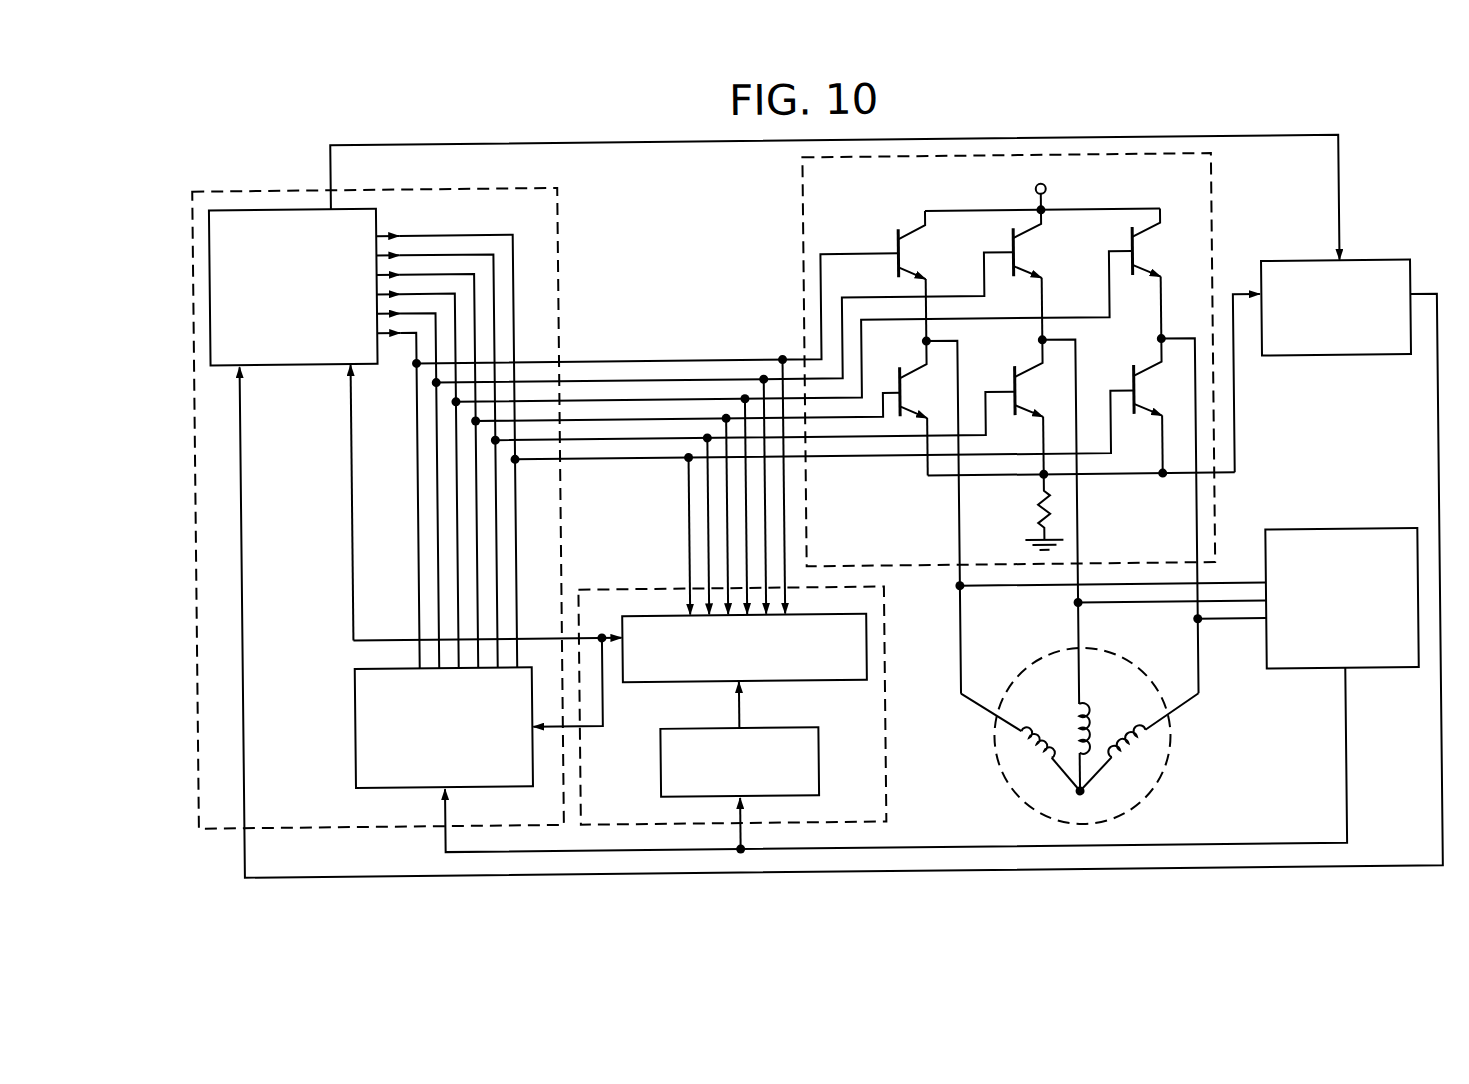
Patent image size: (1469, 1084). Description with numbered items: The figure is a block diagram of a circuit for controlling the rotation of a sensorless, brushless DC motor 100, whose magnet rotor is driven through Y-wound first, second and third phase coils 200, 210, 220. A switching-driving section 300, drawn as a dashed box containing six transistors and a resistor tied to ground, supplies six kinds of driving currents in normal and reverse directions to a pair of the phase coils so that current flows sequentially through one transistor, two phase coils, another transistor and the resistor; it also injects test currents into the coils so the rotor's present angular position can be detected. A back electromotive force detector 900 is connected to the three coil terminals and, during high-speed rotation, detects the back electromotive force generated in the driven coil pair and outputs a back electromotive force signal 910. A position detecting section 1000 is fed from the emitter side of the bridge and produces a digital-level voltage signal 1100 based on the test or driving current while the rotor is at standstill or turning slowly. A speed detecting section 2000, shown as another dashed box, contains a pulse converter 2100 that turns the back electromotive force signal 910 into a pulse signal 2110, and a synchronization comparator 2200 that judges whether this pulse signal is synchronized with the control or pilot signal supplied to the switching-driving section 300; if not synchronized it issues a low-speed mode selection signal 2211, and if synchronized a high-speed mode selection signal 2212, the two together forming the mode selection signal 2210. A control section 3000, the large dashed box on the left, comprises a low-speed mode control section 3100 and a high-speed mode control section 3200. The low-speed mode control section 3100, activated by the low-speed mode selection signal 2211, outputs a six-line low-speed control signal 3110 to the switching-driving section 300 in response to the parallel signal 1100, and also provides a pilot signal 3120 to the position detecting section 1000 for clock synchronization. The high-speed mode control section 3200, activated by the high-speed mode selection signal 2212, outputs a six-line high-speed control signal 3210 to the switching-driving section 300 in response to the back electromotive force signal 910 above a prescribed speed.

The motor 100 is at (1086, 733).
The first phase coil 200 is at (1015, 753).
The second phase coil 210 is at (1087, 730).
The third phase coil 220 is at (1138, 756).
The switching-driving section 300 is at (803, 272).
The back electromotive force detector 900 is at (1336, 533).
The back electromotive force signal 910 is at (1353, 717).
The position detecting section 1000 is at (1375, 265).
The voltage signal 1100 is at (1423, 400).
The speed detecting section 2000 is at (655, 587).
The pulse converter 2100 is at (814, 756).
The pulse signal 2110 is at (749, 688).
The synchronization comparator 2200 is at (863, 641).
The mode selection signal 2210 is at (525, 620).
The low-speed mode selection signal 2211 is at (338, 528).
The high-speed mode selection signal 2212 is at (620, 740).
The control section 3000 is at (559, 235).
The low-speed mode control section 3100 is at (294, 360).
The low-speed control signal 3110 is at (451, 217).
The pilot signal 3120 is at (318, 176).
The high-speed mode control section 3200 is at (351, 725).
The high-speed control signal 3210 is at (406, 567).